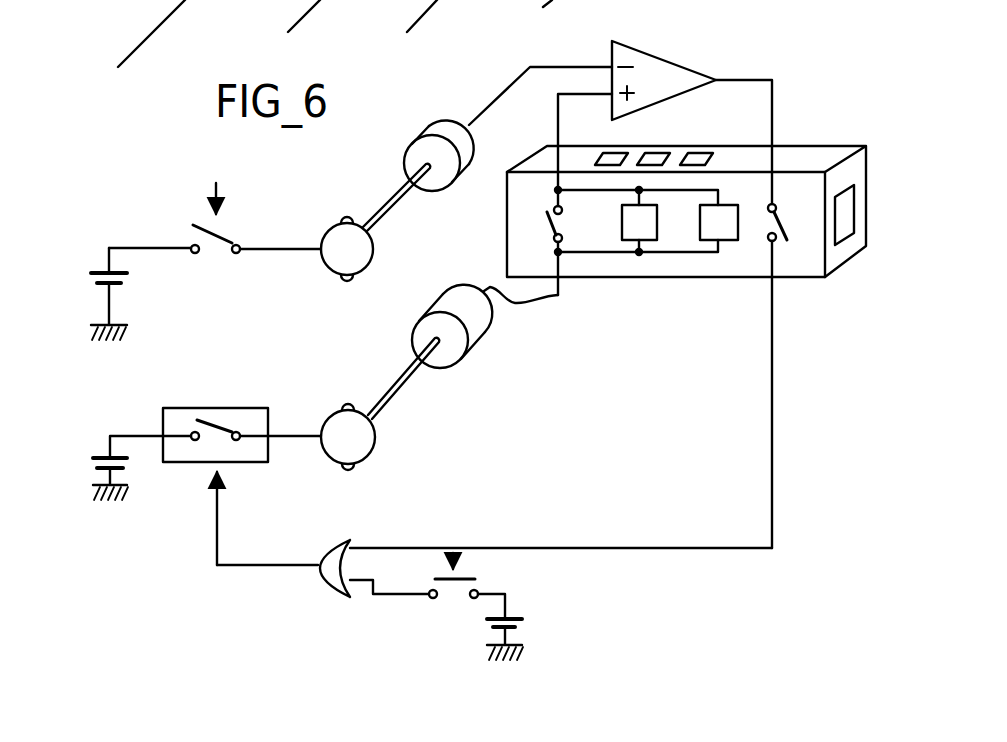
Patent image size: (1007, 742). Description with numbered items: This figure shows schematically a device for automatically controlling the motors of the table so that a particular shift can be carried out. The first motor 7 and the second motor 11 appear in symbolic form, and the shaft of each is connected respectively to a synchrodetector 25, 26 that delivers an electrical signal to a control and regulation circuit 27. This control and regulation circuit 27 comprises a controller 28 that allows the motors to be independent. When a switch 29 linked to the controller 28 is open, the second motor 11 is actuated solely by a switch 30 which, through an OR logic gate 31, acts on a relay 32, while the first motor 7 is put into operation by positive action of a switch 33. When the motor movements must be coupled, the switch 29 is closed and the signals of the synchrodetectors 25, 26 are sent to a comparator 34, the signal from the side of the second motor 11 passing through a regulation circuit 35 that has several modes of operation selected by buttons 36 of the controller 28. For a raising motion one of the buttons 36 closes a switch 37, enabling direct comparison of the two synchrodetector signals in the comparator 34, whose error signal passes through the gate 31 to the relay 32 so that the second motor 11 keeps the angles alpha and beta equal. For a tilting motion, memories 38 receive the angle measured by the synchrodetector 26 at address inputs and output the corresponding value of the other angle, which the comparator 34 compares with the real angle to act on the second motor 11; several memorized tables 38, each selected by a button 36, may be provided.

The motor 7 is at (334, 230).
The motor 11 is at (375, 441).
The synchrodetector 25 is at (441, 130).
The synchrodetector 26 is at (477, 330).
The control and regulation circuit 27 is at (726, 70).
The controller 28 is at (845, 215).
The switch 29 is at (778, 222).
The switch 30 is at (470, 573).
The OR logic gate 31 is at (332, 550).
The relay 32 is at (237, 408).
The switch 33 is at (215, 250).
The comparator 34 is at (648, 67).
The regulation circuit 35 is at (742, 275).
The buttons 36 is at (627, 157).
The switch 37 is at (547, 218).
The memories 38 is at (647, 230).